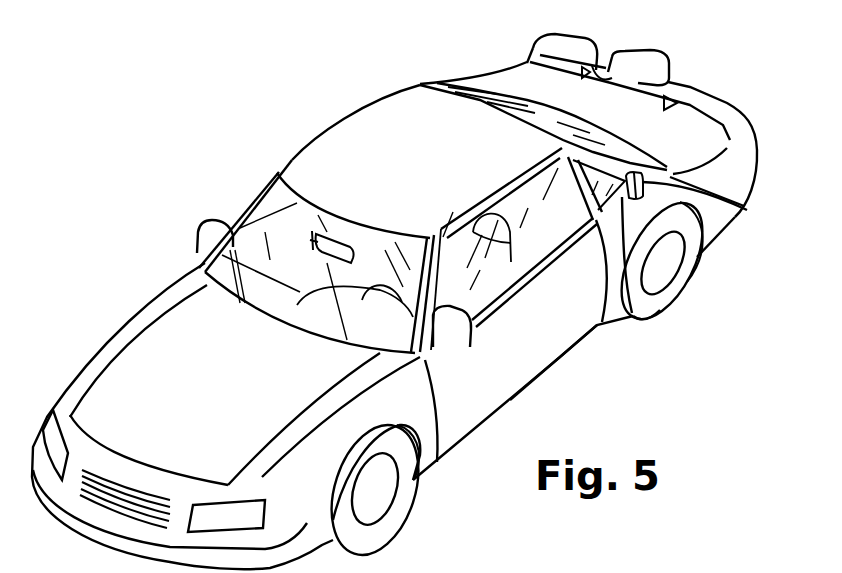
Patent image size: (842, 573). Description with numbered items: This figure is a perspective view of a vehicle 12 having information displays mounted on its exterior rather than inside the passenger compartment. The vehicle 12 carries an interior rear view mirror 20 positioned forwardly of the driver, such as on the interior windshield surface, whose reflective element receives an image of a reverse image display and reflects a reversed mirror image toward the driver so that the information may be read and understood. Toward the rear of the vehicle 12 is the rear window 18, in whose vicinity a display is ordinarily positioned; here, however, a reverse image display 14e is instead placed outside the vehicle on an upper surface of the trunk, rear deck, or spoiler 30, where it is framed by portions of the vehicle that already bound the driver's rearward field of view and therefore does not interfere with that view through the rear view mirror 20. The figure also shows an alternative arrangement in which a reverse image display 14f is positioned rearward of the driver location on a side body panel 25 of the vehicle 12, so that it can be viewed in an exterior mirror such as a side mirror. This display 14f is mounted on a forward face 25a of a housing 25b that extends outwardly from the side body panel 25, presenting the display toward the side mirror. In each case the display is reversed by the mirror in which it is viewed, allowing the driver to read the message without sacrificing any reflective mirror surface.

The vehicle 12 is at (165, 288).
The reverse image display 14e is at (584, 67).
The reverse image display 14f is at (643, 211).
The rear window 18 is at (540, 113).
The interior rear view mirror 20 is at (282, 240).
The side body panel 25 is at (595, 329).
The forward face 25a is at (628, 313).
The housing 25b is at (742, 211).
The spoiler 30 is at (690, 88).